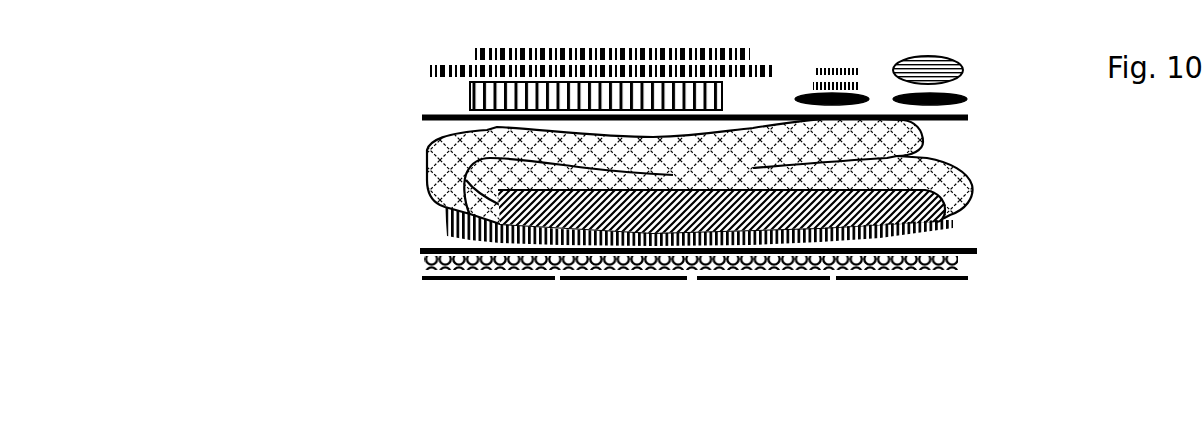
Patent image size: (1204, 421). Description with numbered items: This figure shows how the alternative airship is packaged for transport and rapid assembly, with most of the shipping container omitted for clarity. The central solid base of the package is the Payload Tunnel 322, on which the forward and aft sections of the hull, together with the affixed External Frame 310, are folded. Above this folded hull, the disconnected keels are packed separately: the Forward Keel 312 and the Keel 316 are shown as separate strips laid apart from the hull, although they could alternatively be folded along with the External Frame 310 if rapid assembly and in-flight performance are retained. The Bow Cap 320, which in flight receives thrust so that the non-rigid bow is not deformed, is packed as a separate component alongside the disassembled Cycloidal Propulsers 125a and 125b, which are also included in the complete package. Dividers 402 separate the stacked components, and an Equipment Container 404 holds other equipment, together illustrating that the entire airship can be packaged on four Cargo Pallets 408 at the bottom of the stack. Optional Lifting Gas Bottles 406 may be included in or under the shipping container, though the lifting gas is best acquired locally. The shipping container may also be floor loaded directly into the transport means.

The External Frame 310 is at (700, 175).
The Forward Keel 312 is at (448, 72).
The Keel 316 is at (686, 52).
The Bow Cap 320 is at (938, 63).
The Payload Tunnel 322 is at (721, 211).
The Dividers 402 is at (437, 247).
The Equipment Container 404 is at (470, 96).
The Lifting Gas Bottles 406 is at (958, 263).
The Cargo Pallets 408 is at (762, 280).
The Cycloidal Propulser 125a is at (968, 101).
The Cycloidal Propulser 125b is at (830, 68).